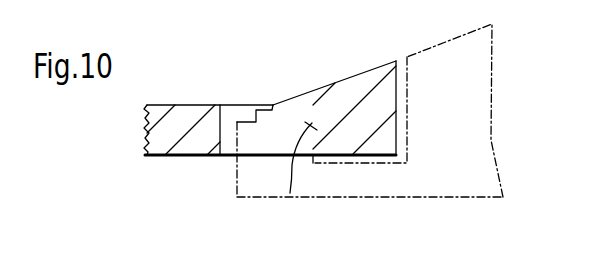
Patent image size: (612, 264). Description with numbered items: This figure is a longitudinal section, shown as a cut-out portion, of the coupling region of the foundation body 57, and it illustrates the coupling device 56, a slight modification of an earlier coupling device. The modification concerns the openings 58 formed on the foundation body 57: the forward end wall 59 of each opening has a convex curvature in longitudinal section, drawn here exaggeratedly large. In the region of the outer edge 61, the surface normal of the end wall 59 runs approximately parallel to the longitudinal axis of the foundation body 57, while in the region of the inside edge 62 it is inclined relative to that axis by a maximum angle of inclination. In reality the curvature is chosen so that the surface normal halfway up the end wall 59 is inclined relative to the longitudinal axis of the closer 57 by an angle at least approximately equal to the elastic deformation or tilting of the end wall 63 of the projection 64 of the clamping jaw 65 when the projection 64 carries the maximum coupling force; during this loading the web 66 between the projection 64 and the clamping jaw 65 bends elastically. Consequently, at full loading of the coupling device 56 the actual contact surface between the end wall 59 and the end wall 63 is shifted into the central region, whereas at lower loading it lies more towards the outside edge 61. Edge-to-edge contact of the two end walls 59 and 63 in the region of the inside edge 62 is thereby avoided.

The coupling device 56 is at (254, 72).
The foundation body 57 is at (264, 159).
The openings 58 is at (230, 112).
The forward end wall 59 is at (290, 193).
The outer edge 61 is at (318, 162).
The inside edge 62 is at (313, 156).
The end wall of the projection 63 is at (316, 118).
The projection 64 is at (277, 128).
The clamping jaw 65 is at (472, 107).
The web 66 is at (385, 183).